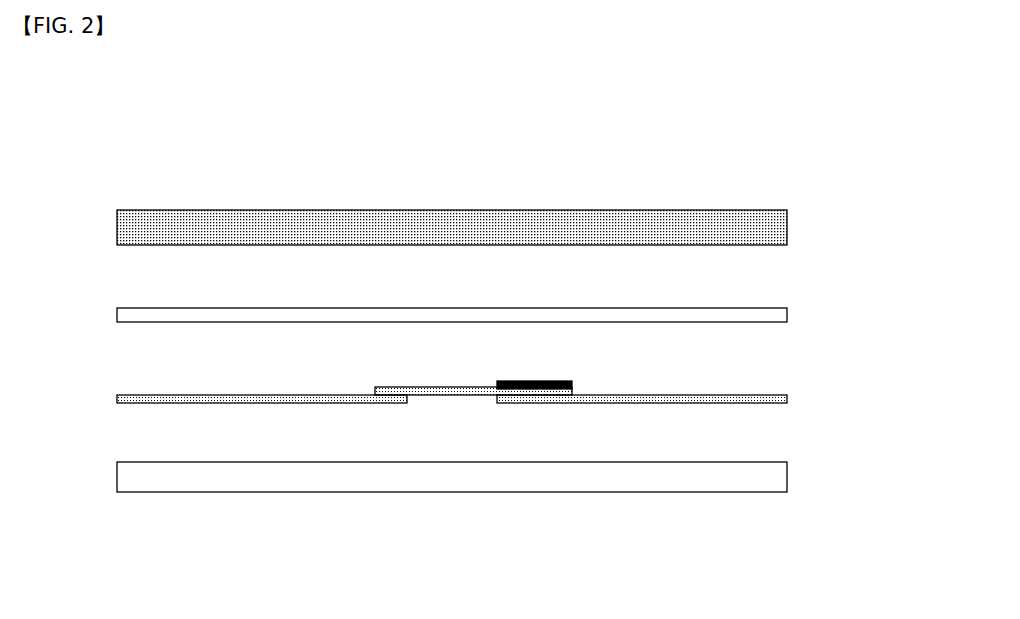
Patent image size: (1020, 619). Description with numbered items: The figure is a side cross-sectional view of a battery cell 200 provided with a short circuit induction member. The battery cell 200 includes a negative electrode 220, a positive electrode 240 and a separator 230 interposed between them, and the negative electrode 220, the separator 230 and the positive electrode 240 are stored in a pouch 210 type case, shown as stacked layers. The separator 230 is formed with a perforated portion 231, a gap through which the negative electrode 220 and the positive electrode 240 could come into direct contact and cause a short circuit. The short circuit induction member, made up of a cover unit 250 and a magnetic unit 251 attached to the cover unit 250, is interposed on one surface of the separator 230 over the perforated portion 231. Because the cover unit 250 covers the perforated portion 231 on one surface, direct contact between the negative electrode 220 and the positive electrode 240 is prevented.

The battery cell 200 is at (97, 149).
The pouch 210 is at (777, 230).
The negative electrode 220 is at (776, 318).
The separator 230 is at (777, 400).
The perforated portion 231 is at (455, 407).
The positive electrode 240 is at (773, 477).
The cover unit 250 is at (432, 388).
The magnetic unit 251 is at (572, 381).